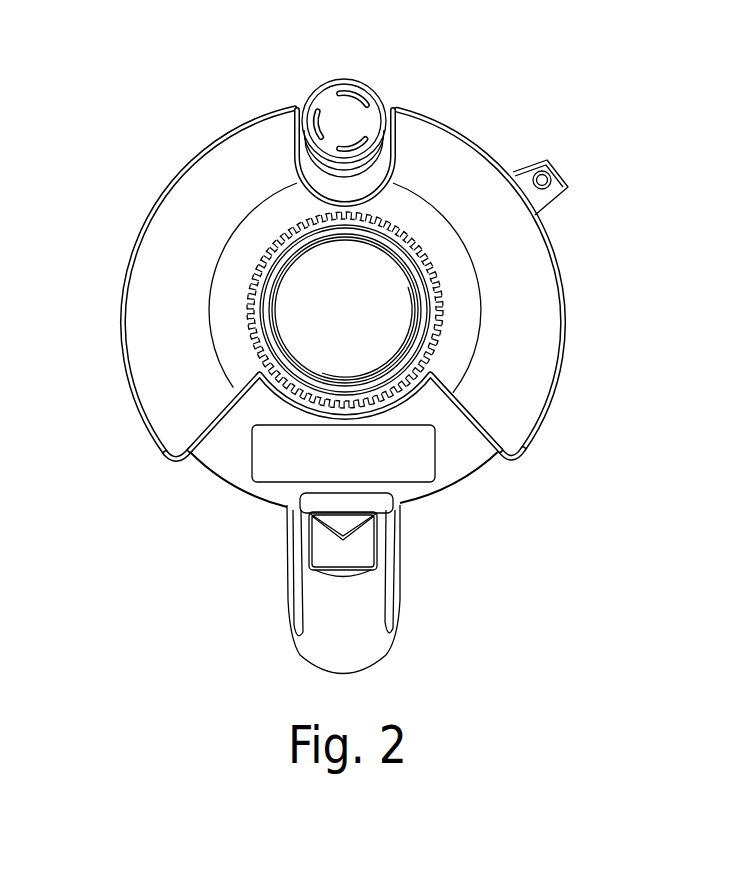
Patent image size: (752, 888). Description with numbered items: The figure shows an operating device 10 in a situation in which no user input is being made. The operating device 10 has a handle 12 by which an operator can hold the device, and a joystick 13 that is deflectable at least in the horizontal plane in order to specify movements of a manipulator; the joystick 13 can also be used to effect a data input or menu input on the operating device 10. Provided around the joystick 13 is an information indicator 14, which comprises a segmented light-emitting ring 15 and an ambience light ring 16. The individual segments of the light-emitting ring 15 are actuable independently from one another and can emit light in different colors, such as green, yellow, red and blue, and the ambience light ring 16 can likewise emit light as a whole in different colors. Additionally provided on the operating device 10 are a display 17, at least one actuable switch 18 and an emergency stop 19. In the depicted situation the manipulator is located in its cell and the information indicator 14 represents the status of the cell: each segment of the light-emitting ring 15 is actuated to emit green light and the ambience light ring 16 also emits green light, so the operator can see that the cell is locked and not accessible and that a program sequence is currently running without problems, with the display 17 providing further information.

The operating device 10 is at (133, 166).
The handle 12 is at (337, 615).
The joystick 13 is at (312, 285).
The information indicator 14 is at (446, 302).
The segmented light-emitting ring 15 is at (400, 222).
The ambience light ring 16 is at (242, 345).
The display 17 is at (418, 474).
The actuable switch 18 is at (337, 547).
The emergency stop 19 is at (328, 108).